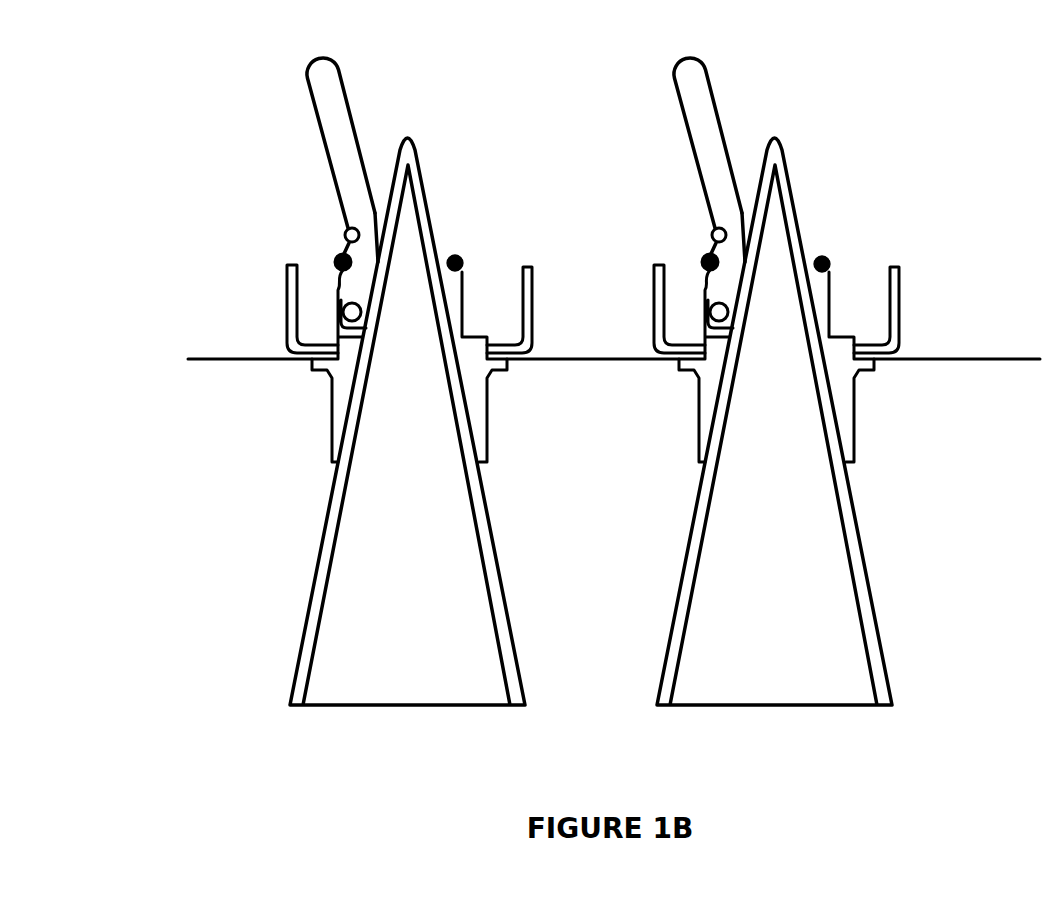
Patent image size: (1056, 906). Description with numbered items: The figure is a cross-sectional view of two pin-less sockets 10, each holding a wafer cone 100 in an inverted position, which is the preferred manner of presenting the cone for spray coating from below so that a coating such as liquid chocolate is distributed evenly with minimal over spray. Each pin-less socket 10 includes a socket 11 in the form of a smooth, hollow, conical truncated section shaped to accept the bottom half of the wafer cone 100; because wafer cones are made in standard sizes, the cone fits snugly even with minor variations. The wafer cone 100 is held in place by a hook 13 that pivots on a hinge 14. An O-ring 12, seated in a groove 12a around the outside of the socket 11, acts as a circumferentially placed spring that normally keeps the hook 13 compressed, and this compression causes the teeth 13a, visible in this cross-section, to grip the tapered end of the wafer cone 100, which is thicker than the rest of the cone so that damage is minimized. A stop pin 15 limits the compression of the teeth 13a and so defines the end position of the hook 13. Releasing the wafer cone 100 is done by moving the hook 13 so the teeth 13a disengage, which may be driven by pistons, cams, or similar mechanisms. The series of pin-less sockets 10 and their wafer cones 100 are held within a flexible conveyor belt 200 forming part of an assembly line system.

The pin-less socket 10 is at (195, 236).
The socket 11 is at (697, 413).
The O-ring 12 is at (462, 270).
The groove 12a is at (455, 252).
The hook 13 is at (702, 122).
The teeth 13a is at (388, 258).
The hinge 14 is at (342, 313).
The stop pin 15 is at (345, 228).
The wafer cone 100 is at (683, 550).
The flexible conveyor belt 200 is at (955, 360).